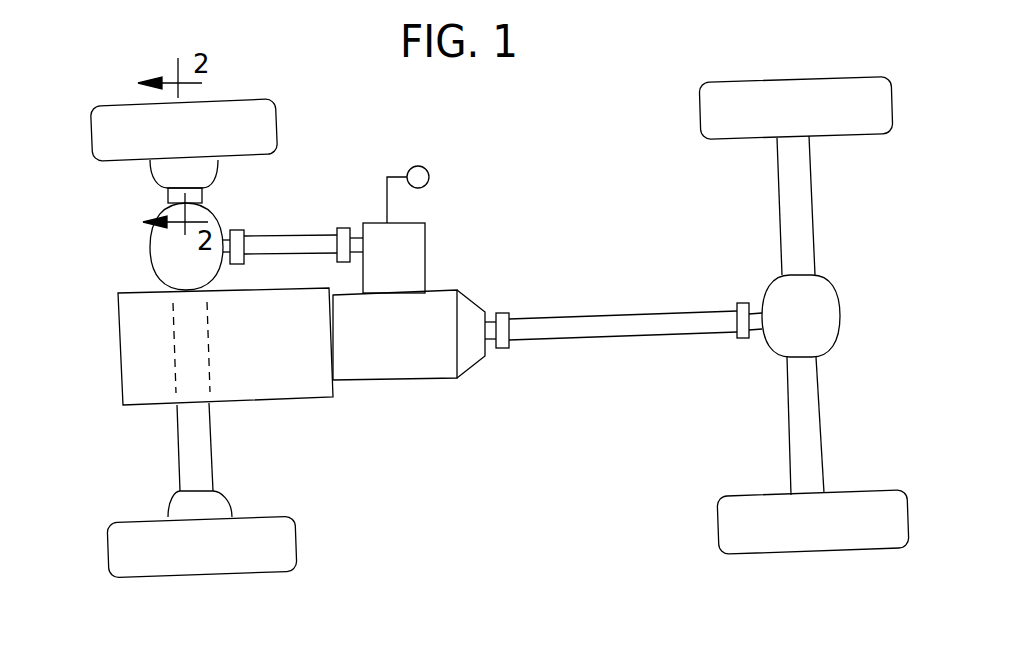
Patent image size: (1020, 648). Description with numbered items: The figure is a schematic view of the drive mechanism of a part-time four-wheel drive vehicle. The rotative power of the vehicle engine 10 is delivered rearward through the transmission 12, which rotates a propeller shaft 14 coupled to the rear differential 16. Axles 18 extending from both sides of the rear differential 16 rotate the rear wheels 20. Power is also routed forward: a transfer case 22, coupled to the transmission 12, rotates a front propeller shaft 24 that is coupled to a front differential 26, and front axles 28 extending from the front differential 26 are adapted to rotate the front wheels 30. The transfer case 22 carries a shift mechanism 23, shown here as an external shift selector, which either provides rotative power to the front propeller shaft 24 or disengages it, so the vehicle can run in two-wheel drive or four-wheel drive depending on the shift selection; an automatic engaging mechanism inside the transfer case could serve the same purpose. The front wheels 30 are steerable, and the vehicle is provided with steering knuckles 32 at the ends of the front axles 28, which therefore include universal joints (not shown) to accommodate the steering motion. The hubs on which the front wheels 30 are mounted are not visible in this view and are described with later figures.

The vehicle engine 10 is at (278, 382).
The transmission 12 is at (383, 360).
The propeller shaft 14 is at (613, 338).
The rear differential 16 is at (825, 323).
The axles 18 is at (803, 217).
The rear wheels 20 is at (748, 92).
The transfer case 22 is at (376, 223).
The shift mechanism 23 is at (390, 177).
The front propeller shaft 24 is at (292, 235).
The front differential 26 is at (152, 253).
The front axles 28 is at (168, 199).
The front wheels 30 is at (236, 108).
The steering knuckles 32 is at (168, 172).